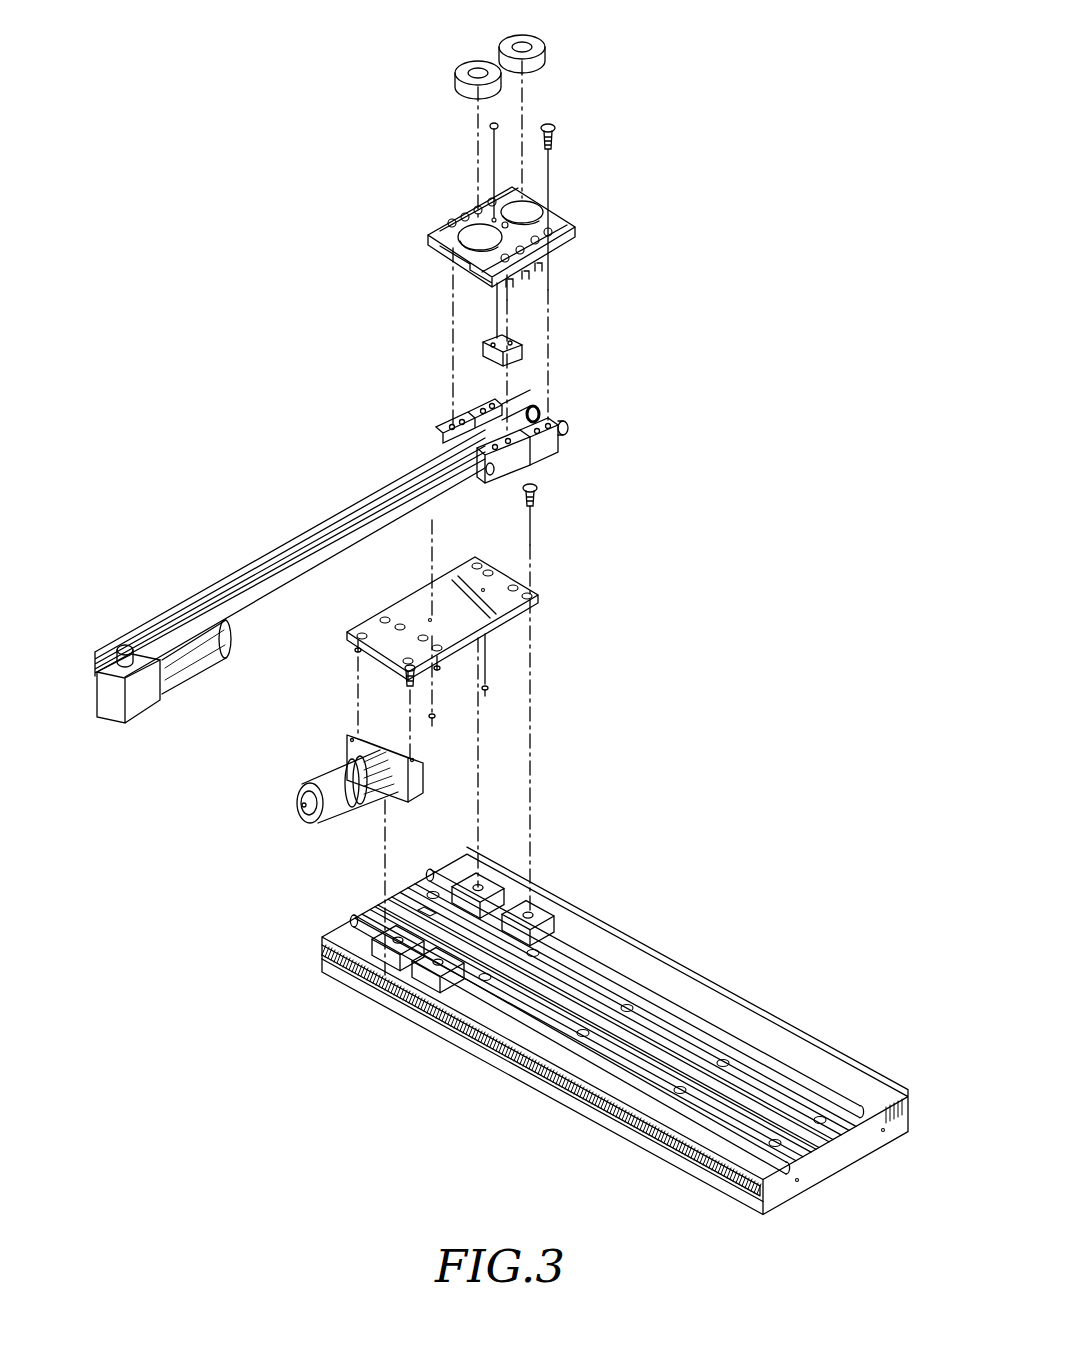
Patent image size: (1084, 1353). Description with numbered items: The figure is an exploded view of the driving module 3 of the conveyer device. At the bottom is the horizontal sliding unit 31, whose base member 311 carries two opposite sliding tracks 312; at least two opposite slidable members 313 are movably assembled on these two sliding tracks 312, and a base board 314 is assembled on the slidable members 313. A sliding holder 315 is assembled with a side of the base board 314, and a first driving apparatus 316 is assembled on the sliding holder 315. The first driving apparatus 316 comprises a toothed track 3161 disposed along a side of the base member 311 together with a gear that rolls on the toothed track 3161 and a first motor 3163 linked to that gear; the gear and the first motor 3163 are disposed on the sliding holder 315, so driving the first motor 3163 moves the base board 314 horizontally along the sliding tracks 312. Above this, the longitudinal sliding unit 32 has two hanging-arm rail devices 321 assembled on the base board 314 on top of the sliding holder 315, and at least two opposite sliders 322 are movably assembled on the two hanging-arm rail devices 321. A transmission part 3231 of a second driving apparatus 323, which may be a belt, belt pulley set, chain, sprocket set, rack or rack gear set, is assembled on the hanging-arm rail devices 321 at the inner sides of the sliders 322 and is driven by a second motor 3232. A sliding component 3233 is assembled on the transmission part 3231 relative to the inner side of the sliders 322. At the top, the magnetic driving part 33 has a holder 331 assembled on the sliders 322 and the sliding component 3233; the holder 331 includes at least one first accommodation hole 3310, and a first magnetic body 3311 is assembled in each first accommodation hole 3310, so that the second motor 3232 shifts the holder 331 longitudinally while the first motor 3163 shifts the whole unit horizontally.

The driving module 3 is at (716, 657).
The horizontal sliding unit 31 is at (617, 1048).
The base member 311 is at (813, 1178).
The sliding tracks 312 is at (857, 1117).
The slidable members 313 is at (540, 925).
The base board 314 is at (380, 628).
The sliding holder 315 is at (420, 772).
The first driving apparatus 316 is at (290, 849).
The toothed track 3161 is at (473, 1037).
The first motor 3163 is at (328, 784).
The longitudinal sliding unit 32 is at (481, 581).
The hanging-arm rail devices 321 is at (338, 512).
The sliders 322 is at (552, 455).
The second driving apparatus 323 is at (308, 542).
The transmission part 3231 is at (228, 604).
The second motor 3232 is at (174, 672).
The sliding component 3233 is at (486, 350).
The magnetic driving part 33 is at (510, 182).
The holder 331 is at (565, 222).
The first accommodation hole 3310 is at (462, 232).
The first magnetic body 3311 is at (540, 52).